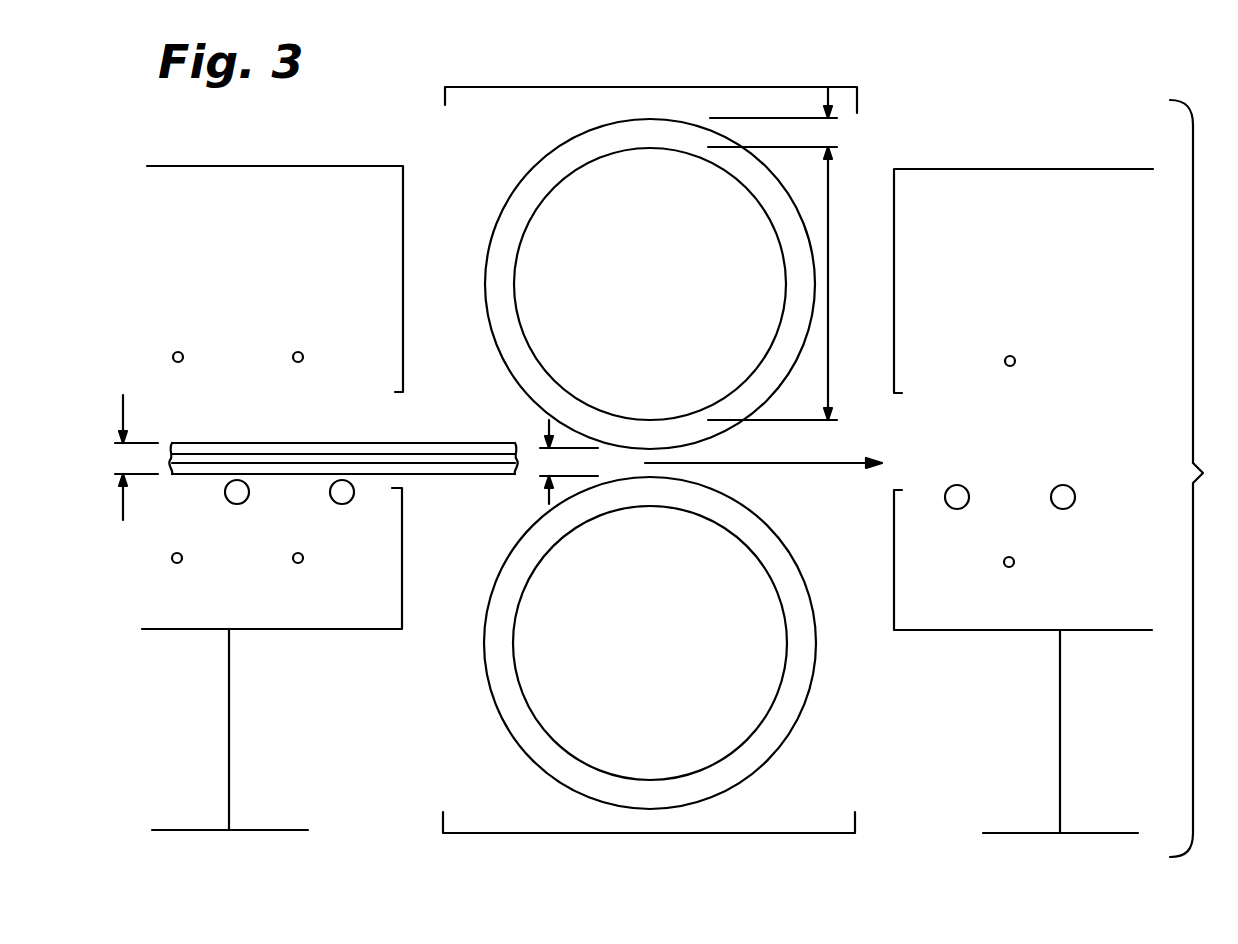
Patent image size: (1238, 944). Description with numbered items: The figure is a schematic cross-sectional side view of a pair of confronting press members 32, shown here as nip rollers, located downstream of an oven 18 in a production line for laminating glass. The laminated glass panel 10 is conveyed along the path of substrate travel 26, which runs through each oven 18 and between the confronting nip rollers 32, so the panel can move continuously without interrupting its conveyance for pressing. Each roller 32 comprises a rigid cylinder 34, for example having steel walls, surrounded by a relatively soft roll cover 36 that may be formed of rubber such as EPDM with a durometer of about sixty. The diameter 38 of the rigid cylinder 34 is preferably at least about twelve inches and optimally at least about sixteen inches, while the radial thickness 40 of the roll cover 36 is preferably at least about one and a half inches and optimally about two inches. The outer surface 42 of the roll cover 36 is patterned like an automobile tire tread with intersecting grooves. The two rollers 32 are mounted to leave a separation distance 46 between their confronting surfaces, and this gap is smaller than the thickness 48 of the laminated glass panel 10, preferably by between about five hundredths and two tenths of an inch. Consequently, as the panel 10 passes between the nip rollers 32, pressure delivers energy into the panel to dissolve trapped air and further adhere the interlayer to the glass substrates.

The laminated glass panel 10 is at (237, 443).
The oven 18 is at (168, 166).
The path of substrate travel 26 is at (835, 462).
The confronting press members 32 is at (658, 452).
The rigid cylinder 34 is at (545, 225).
The roll cover 36 is at (583, 272).
The diameter 38 is at (832, 283).
The radial thickness 40 is at (828, 135).
The outer surface 42 is at (548, 152).
The separation distance 46 is at (547, 462).
The thickness 48 is at (120, 458).